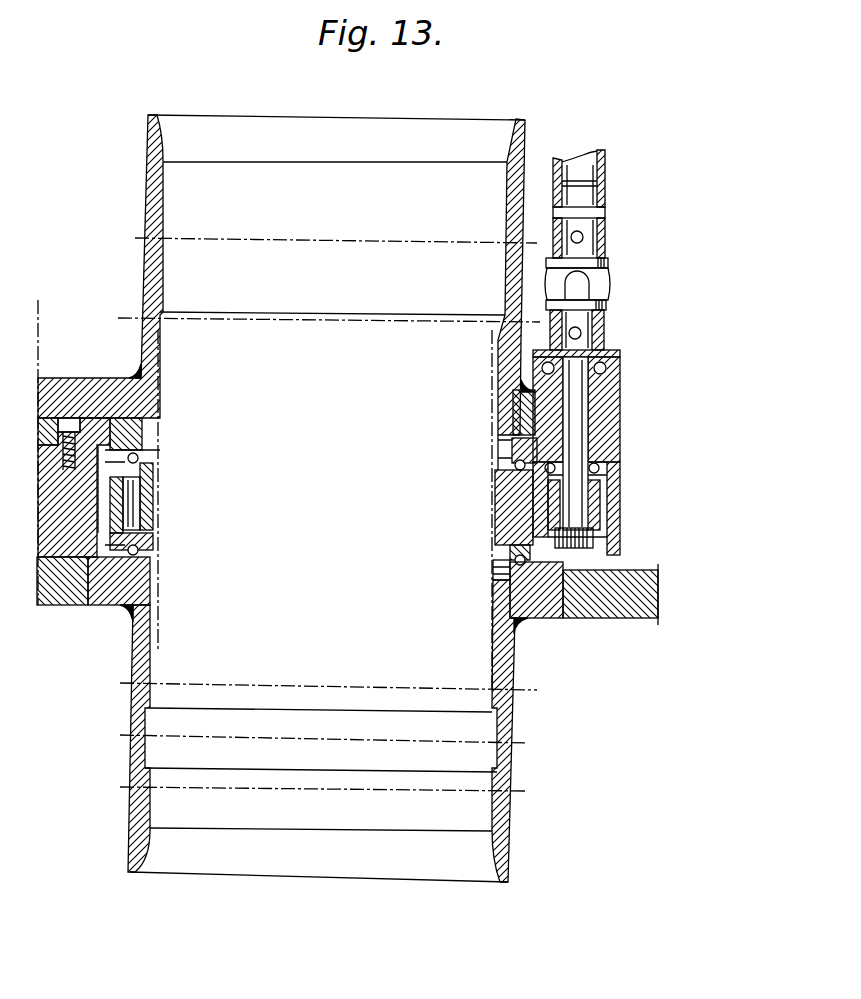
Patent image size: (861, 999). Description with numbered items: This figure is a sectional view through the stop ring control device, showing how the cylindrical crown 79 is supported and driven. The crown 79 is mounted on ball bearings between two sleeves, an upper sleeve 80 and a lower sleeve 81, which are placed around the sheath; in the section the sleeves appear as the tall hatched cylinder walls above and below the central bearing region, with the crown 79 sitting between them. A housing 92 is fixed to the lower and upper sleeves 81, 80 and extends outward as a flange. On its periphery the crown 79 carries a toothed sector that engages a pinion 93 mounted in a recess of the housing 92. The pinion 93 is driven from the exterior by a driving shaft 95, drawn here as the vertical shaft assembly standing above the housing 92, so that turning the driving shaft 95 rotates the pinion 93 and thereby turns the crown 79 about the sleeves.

The cylindrical crown 79 is at (503, 515).
The upper sleeve 80 is at (507, 355).
The lower sleeve 81 is at (500, 655).
The housing 92 is at (617, 567).
The pinion 93 is at (600, 515).
The driving shaft 95 is at (577, 400).